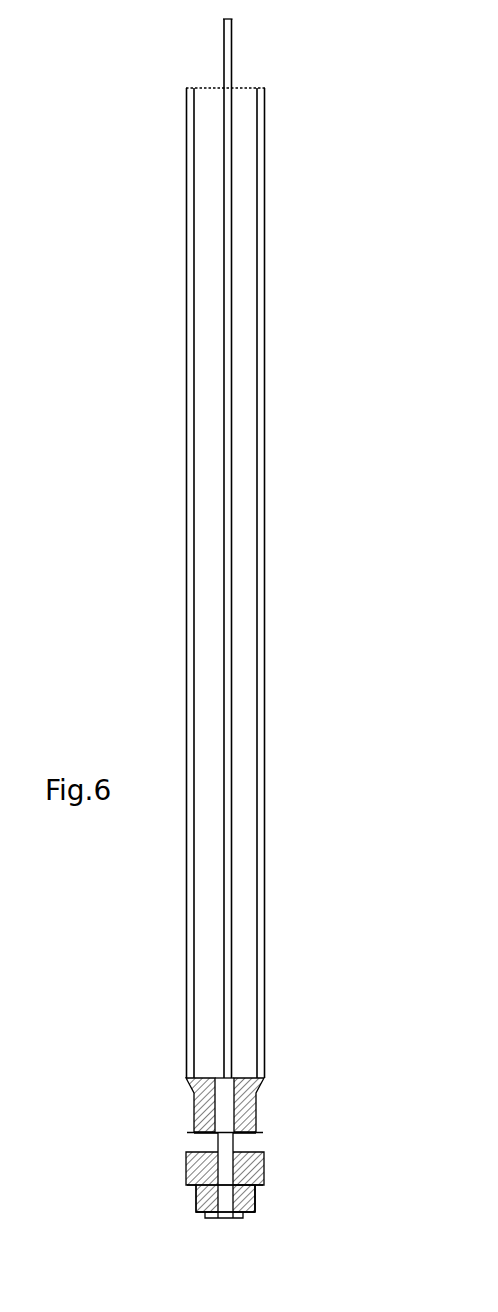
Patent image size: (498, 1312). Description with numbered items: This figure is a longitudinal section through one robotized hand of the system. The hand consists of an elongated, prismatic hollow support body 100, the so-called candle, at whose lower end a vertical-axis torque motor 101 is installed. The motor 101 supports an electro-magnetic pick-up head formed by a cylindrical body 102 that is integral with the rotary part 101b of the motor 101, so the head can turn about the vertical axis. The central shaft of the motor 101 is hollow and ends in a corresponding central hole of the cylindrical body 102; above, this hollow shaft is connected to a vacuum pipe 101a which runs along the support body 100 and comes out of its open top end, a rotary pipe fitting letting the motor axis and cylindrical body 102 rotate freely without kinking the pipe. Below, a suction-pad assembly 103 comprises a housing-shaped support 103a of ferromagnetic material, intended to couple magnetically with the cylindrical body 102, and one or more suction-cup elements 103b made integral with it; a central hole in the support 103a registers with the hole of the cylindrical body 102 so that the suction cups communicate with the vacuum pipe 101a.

The support body 100 is at (265, 813).
The vacuum pipe 101a is at (228, 707).
The vertical-axis motor 101 is at (255, 1121).
The rotary part 101b is at (196, 1133).
The cylindrical body 102 is at (272, 1146).
The suction-pad assembly 103 is at (178, 1203).
The housing-shaped support 103a is at (252, 1197).
The suction-cup elements 103b is at (240, 1216).